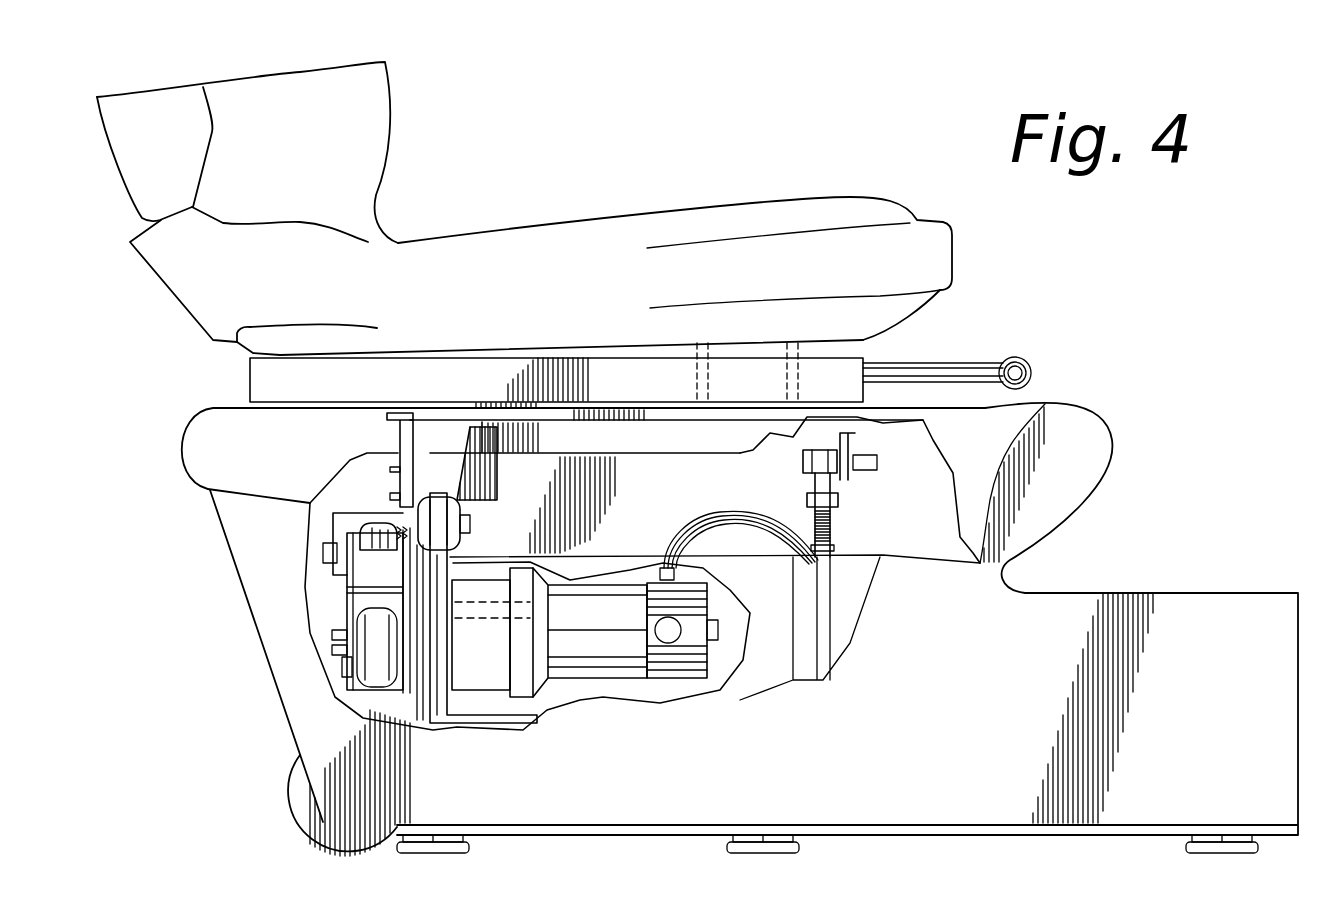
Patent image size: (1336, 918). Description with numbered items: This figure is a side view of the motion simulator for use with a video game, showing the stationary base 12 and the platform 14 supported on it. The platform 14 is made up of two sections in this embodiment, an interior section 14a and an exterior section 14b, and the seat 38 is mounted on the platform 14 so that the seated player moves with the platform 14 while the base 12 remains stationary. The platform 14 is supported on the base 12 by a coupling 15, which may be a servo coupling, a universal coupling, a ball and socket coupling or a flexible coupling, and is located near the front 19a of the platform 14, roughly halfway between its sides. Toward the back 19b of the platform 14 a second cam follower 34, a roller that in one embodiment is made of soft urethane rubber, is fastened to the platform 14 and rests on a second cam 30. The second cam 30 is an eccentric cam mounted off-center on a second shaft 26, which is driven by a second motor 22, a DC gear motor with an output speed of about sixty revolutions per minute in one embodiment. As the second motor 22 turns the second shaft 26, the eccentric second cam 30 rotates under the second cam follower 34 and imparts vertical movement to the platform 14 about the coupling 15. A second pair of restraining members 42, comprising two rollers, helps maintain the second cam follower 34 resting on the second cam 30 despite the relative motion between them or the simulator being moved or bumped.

The base 12 is at (954, 676).
The platform 14 is at (166, 353).
The interior section 14a is at (655, 440).
The exterior section 14b is at (650, 394).
The coupling 15 is at (805, 465).
The front 19a is at (1035, 398).
The back 19b is at (448, 468).
The second motor 22 is at (612, 650).
The second shaft 26 is at (515, 613).
The second cam 30 is at (367, 600).
The second cam follower 34 is at (378, 523).
The seat 38 is at (316, 166).
The second pair of restraining members 42 is at (374, 705).